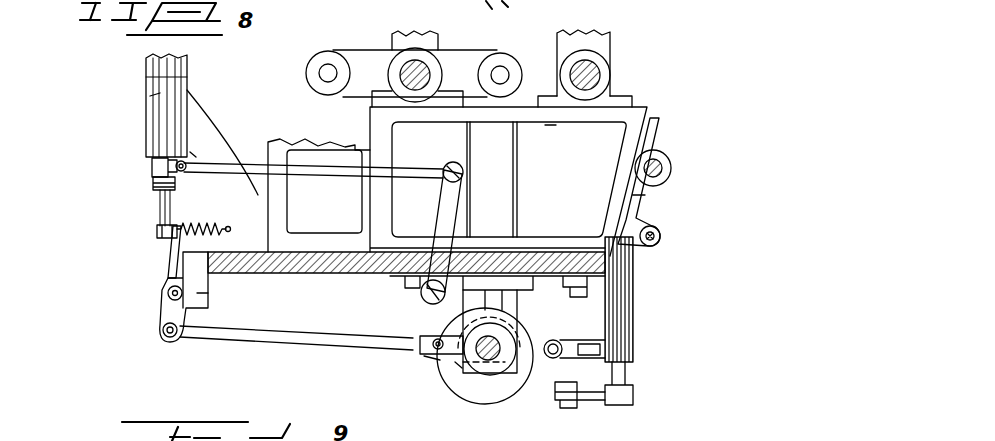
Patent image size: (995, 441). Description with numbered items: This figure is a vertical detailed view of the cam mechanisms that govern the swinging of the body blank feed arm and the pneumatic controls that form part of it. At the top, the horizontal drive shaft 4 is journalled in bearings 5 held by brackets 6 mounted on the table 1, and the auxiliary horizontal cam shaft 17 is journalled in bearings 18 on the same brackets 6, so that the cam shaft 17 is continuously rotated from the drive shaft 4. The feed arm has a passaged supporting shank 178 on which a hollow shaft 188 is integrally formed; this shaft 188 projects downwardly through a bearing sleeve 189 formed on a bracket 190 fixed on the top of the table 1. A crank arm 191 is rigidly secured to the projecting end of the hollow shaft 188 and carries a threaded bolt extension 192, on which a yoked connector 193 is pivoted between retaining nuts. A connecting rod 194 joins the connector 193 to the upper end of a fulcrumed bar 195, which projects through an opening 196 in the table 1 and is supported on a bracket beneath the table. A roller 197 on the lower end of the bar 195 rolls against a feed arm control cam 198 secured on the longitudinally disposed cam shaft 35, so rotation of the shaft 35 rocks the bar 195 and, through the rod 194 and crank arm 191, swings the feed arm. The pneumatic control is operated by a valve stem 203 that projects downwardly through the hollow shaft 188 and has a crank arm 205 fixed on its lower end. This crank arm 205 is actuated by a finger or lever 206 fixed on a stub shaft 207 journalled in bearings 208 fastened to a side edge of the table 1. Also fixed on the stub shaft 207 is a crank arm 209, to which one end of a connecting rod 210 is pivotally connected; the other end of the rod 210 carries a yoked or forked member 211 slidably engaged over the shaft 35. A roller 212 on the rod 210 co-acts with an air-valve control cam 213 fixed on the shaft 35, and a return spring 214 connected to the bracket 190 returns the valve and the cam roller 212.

The table 1 is at (325, 278).
The horizontal drive shaft 4 is at (672, 167).
The bearings 5 is at (668, 186).
The brackets 6 is at (566, 112).
The auxiliary horizontal cam shaft 17 is at (598, 80).
The bearings 18 is at (598, 62).
The longitudinally disposed cam shaft 35 is at (527, 388).
The passaged supporting shank 178 is at (147, 63).
The hollow shaft 188 is at (156, 183).
The bearing sleeve 189 is at (160, 97).
The bracket 190 is at (193, 130).
The crank arm 191 is at (152, 162).
The threaded bolt extension 192 is at (185, 163).
The yoked connector 193 is at (200, 158).
The connecting rod 194 is at (312, 172).
The fulcrumed bar 195 is at (445, 214).
The opening 196 is at (410, 282).
The roller 197 is at (433, 350).
The feed arm control cam 198 is at (528, 350).
The valve stem 203 is at (160, 208).
The crank arm 205 is at (158, 233).
The finger or lever 206 is at (170, 256).
The stub shaft 207 is at (162, 293).
The bearings 208 is at (208, 293).
The crank arm 209 is at (160, 314).
The connecting rod 210 is at (248, 345).
The yoked or forked member 211 is at (457, 369).
The roller 212 is at (430, 376).
The air-valve control cam 213 is at (468, 386).
The return spring 214 is at (240, 212).